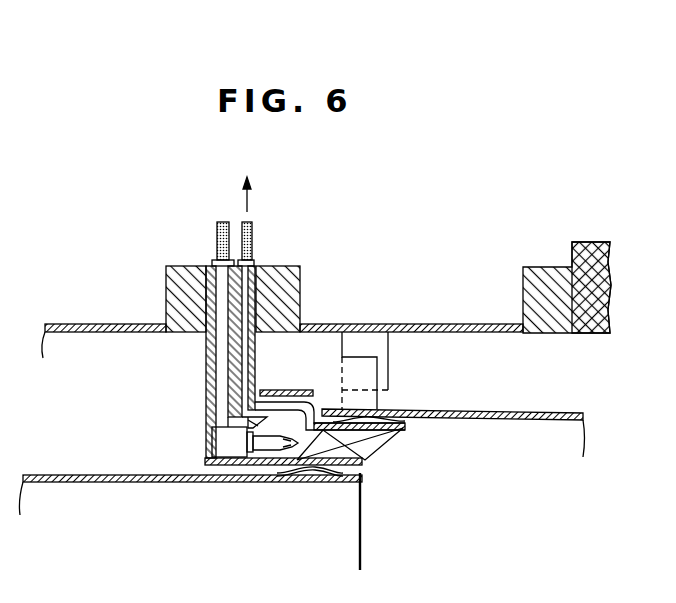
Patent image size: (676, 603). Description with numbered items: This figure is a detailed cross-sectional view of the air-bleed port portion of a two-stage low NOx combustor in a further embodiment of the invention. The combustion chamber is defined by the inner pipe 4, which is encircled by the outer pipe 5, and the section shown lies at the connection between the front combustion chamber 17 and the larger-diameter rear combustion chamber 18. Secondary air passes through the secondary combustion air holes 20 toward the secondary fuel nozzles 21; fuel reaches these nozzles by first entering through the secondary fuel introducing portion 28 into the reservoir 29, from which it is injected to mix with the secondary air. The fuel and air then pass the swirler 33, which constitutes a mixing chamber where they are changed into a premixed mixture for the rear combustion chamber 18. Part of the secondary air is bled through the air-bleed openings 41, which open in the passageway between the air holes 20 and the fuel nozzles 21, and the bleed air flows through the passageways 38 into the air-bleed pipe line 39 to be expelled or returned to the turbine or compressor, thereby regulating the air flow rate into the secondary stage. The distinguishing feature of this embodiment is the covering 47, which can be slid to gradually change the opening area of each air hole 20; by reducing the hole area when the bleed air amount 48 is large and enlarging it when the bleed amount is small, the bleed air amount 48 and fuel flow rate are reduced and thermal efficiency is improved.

The inner pipe 4 is at (60, 475).
The outer pipe 5 is at (72, 324).
The front combustion chamber 17 is at (165, 538).
The rear combustion chamber 18 is at (498, 469).
The secondary air supply hole 20 is at (295, 401).
The secondary fuel nozzle 21 is at (269, 446).
The secondary fuel introducing portion 28 is at (214, 246).
The reservoir 29 is at (210, 443).
The swirler 33 is at (368, 450).
The passageway 38 is at (250, 378).
The air-bleed pipe line 39 is at (255, 243).
The air-bleed opening 41 is at (243, 418).
The covering 47 is at (283, 390).
The bleed air amount 48 is at (250, 212).